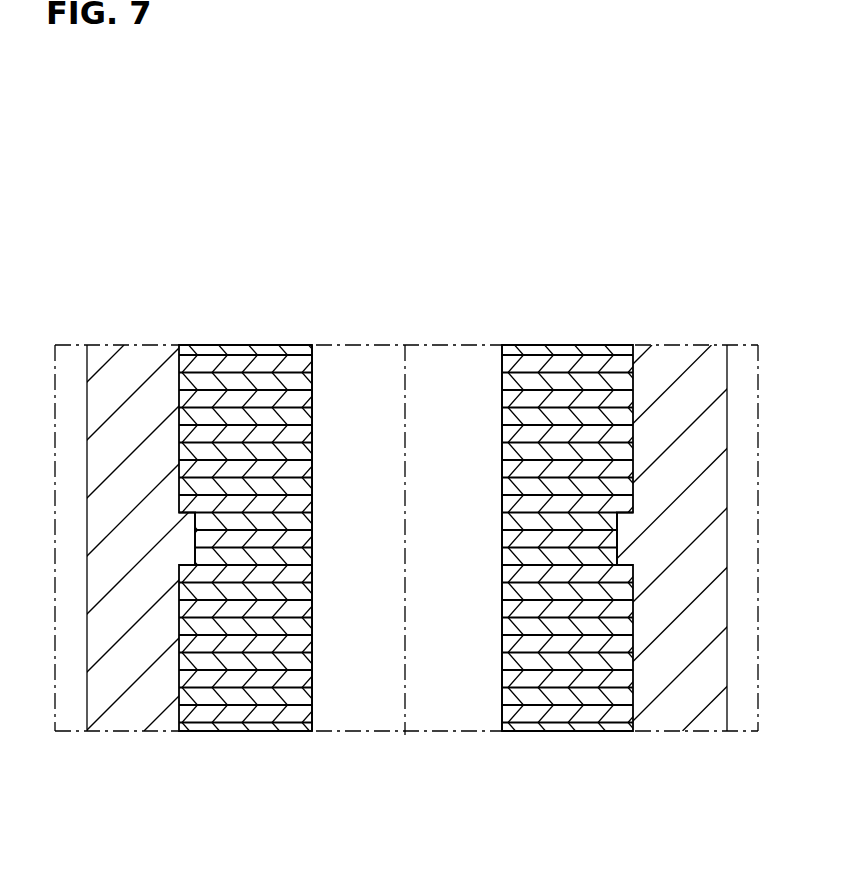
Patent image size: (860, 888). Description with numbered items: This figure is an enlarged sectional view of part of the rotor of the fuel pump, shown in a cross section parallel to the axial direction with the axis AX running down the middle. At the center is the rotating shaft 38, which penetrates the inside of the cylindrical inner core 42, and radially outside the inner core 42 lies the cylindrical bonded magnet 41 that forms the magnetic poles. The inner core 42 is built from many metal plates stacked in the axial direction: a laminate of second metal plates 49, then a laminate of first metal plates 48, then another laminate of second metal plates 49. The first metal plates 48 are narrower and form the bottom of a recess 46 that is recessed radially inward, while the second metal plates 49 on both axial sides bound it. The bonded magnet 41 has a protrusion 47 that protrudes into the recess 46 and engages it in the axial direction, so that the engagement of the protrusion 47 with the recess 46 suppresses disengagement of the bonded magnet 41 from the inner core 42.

The rotating shaft 38 is at (357, 365).
The bonded magnet 41 is at (135, 365).
The inner core 42 is at (245, 344).
The recess 46 is at (194, 543).
The protrusion 47 is at (201, 512).
The first metal plate 48 is at (305, 523).
The second metal plate 49 is at (304, 487).
The axis AX is at (404, 708).